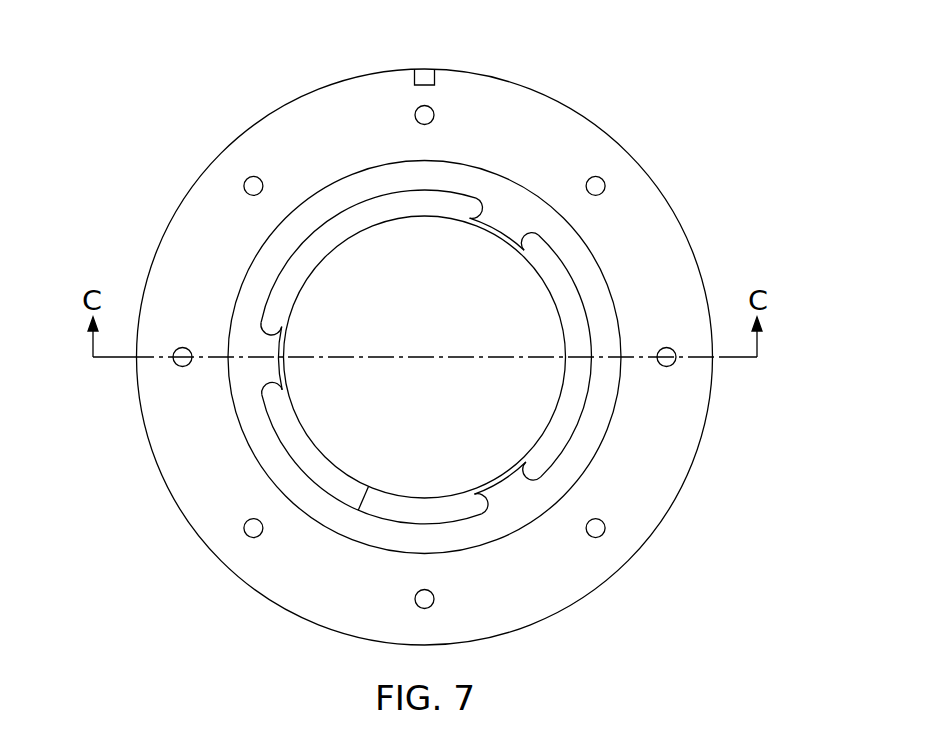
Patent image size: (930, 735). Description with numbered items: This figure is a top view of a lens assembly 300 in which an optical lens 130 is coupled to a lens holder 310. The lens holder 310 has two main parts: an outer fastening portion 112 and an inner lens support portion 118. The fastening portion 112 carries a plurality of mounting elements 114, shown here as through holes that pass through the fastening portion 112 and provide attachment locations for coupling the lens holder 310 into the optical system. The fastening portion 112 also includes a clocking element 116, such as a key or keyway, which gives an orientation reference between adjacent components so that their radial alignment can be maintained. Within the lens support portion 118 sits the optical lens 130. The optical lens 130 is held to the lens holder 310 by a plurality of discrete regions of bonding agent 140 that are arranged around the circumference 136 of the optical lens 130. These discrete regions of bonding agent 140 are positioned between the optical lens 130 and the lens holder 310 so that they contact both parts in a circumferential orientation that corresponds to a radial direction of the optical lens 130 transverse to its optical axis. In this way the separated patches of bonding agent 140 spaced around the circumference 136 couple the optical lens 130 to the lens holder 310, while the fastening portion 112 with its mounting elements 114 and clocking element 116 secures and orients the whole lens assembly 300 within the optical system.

The lens assembly 300 is at (694, 104).
The lens holder 310 is at (254, 99).
The fastening portion 112 is at (645, 527).
The mounting elements 114 is at (252, 176).
The clocking element 116 is at (424, 72).
The lens support portion 118 is at (585, 445).
The optical lens 130 is at (575, 394).
The circumference 136 is at (358, 510).
The discrete regions of bonding agent 140 is at (498, 230).